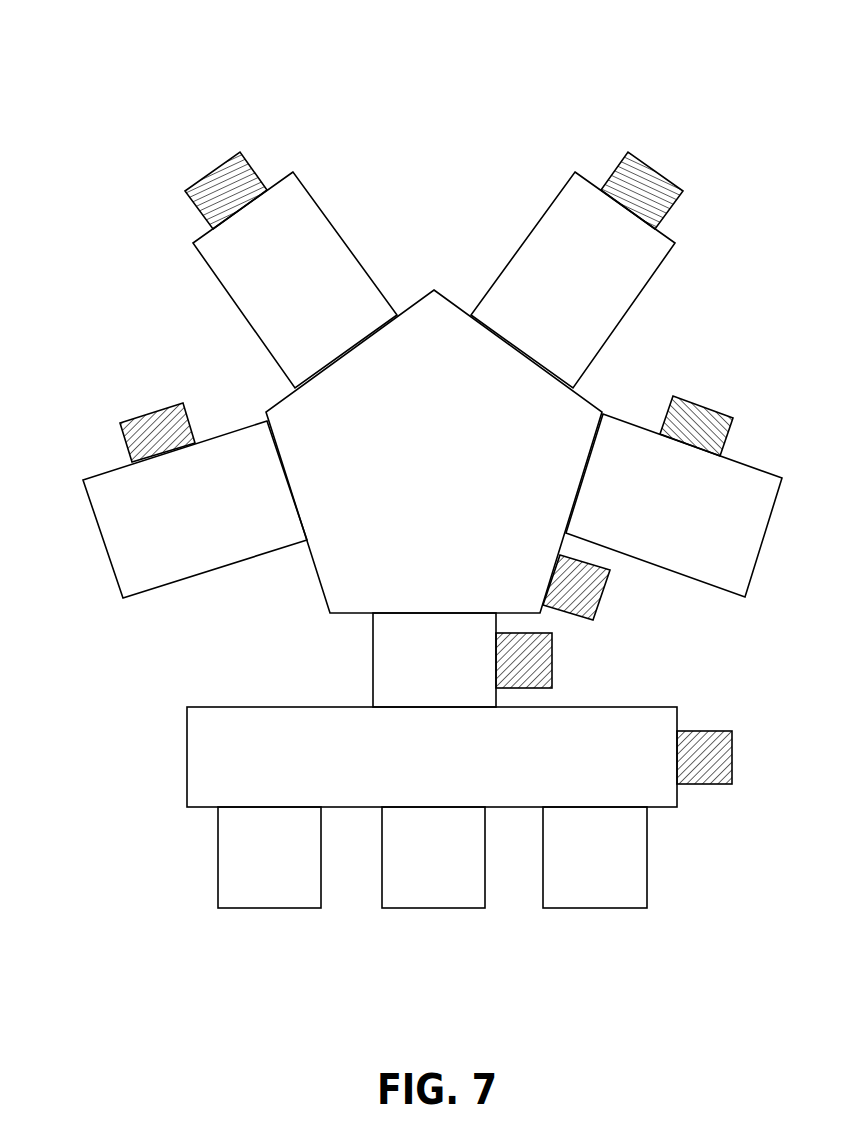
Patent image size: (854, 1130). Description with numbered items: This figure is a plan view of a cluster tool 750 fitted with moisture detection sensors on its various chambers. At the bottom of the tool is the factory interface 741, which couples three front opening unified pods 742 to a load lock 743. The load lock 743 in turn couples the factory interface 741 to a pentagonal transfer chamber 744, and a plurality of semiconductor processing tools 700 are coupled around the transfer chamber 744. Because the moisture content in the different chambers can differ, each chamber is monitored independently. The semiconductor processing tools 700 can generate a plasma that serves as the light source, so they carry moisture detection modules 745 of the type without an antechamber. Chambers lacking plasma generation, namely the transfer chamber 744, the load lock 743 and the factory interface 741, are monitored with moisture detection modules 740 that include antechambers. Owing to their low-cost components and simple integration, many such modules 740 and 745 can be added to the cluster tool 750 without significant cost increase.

The cluster tool 750 is at (704, 48).
The semiconductor processing tool 700 is at (328, 252).
The moisture detection module 745 is at (218, 165).
The transfer chamber 744 is at (560, 430).
The load lock 743 is at (387, 669).
The factory interface 741 is at (200, 756).
The front opening unified pod 742 is at (256, 890).
The moisture detection module 740 is at (592, 597).